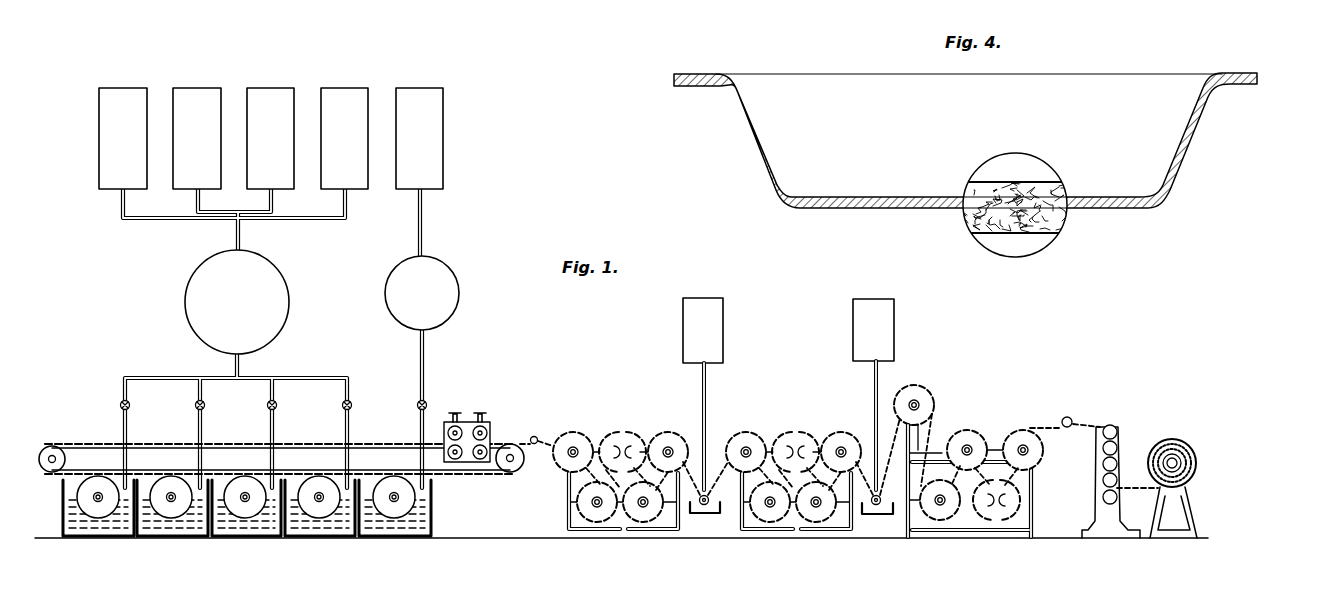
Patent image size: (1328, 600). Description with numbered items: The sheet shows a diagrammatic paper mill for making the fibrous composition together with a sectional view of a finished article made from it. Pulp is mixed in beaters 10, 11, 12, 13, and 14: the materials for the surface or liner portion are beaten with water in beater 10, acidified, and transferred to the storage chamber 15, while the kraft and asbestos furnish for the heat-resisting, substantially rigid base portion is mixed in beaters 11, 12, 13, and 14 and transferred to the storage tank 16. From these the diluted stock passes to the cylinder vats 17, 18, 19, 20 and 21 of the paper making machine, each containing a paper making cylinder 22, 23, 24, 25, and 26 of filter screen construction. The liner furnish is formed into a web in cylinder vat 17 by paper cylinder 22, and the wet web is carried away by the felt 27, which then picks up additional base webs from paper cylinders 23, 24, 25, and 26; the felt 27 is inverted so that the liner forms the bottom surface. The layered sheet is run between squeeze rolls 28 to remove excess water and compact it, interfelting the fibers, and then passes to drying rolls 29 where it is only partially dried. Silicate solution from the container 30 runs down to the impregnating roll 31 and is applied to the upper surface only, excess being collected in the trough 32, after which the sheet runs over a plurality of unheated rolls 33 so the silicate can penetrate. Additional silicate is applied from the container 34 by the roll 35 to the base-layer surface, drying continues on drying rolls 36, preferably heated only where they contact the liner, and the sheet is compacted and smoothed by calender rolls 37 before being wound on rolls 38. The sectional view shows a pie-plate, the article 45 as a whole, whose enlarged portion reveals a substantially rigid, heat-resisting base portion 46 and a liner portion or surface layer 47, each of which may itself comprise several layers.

In FIG. 1, the beater 10 is at (419, 138).
In FIG. 1, the beater 11 is at (344, 138).
In FIG. 1, the beater 12 is at (270, 138).
In FIG. 1, the beater 13 is at (197, 138).
In FIG. 1, the beater 14 is at (123, 138).
In FIG. 1, the storage chamber 15 is at (422, 293).
In FIG. 1, the storage tank 16 is at (237, 302).
In FIG. 1, the cylinder vat 17 is at (403, 532).
In FIG. 1, the cylinder vat 18 is at (328, 532).
In FIG. 1, the cylinder vat 19 is at (255, 532).
In FIG. 1, the cylinder vat 20 is at (181, 532).
In FIG. 1, the cylinder vat 21 is at (105, 532).
In FIG. 1, the paper making cylinder 22 is at (391, 478).
In FIG. 1, the paper making cylinder 23 is at (317, 478).
In FIG. 1, the paper making cylinder 24 is at (244, 478).
In FIG. 1, the paper making cylinder 25 is at (170, 478).
In FIG. 1, the paper making cylinder 26 is at (97, 478).
In FIG. 1, the felt 27 is at (466, 477).
In FIG. 1, the squeeze rolls 28 is at (490, 425).
In FIG. 1, the drying rolls 29 is at (602, 528).
In FIG. 1, the container 30 is at (703, 394).
In FIG. 1, the impregnating roll 31 is at (699, 508).
In FIG. 1, the trough 32 is at (720, 514).
In FIG. 1, the rolls 33 is at (780, 526).
In FIG. 1, the container 34 is at (873, 394).
In FIG. 1, the roll 35 is at (873, 515).
In FIG. 1, the drying rolls 36 is at (920, 398).
In FIG. 1, the calender rolls 37 is at (1112, 428).
In FIG. 1, the rolls 38 is at (1185, 447).
In FIG. 4, the article 45 is at (1206, 150).
In FIG. 4, the base portion 46 is at (988, 214).
In FIG. 4, the liner portion 47 is at (1036, 190).